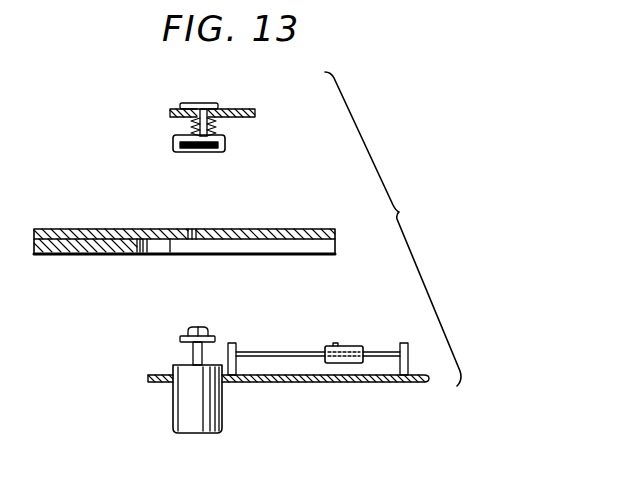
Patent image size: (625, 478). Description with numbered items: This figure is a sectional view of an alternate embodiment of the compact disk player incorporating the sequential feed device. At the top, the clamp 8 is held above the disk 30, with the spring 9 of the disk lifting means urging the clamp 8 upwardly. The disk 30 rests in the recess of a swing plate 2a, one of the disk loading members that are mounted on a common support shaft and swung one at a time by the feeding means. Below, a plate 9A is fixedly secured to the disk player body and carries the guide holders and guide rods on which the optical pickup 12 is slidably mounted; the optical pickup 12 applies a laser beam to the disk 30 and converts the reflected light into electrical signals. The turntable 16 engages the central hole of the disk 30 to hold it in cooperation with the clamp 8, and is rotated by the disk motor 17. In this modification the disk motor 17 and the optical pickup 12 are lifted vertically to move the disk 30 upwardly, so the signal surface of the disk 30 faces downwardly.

The swing plate 2a is at (337, 246).
The disk 30 is at (304, 229).
The clamp 8 is at (226, 139).
The spring 9 is at (190, 128).
The plate 9A is at (362, 383).
The optical pickup 12 is at (349, 346).
The turntable 16 is at (183, 337).
The disk motor 17 is at (223, 411).